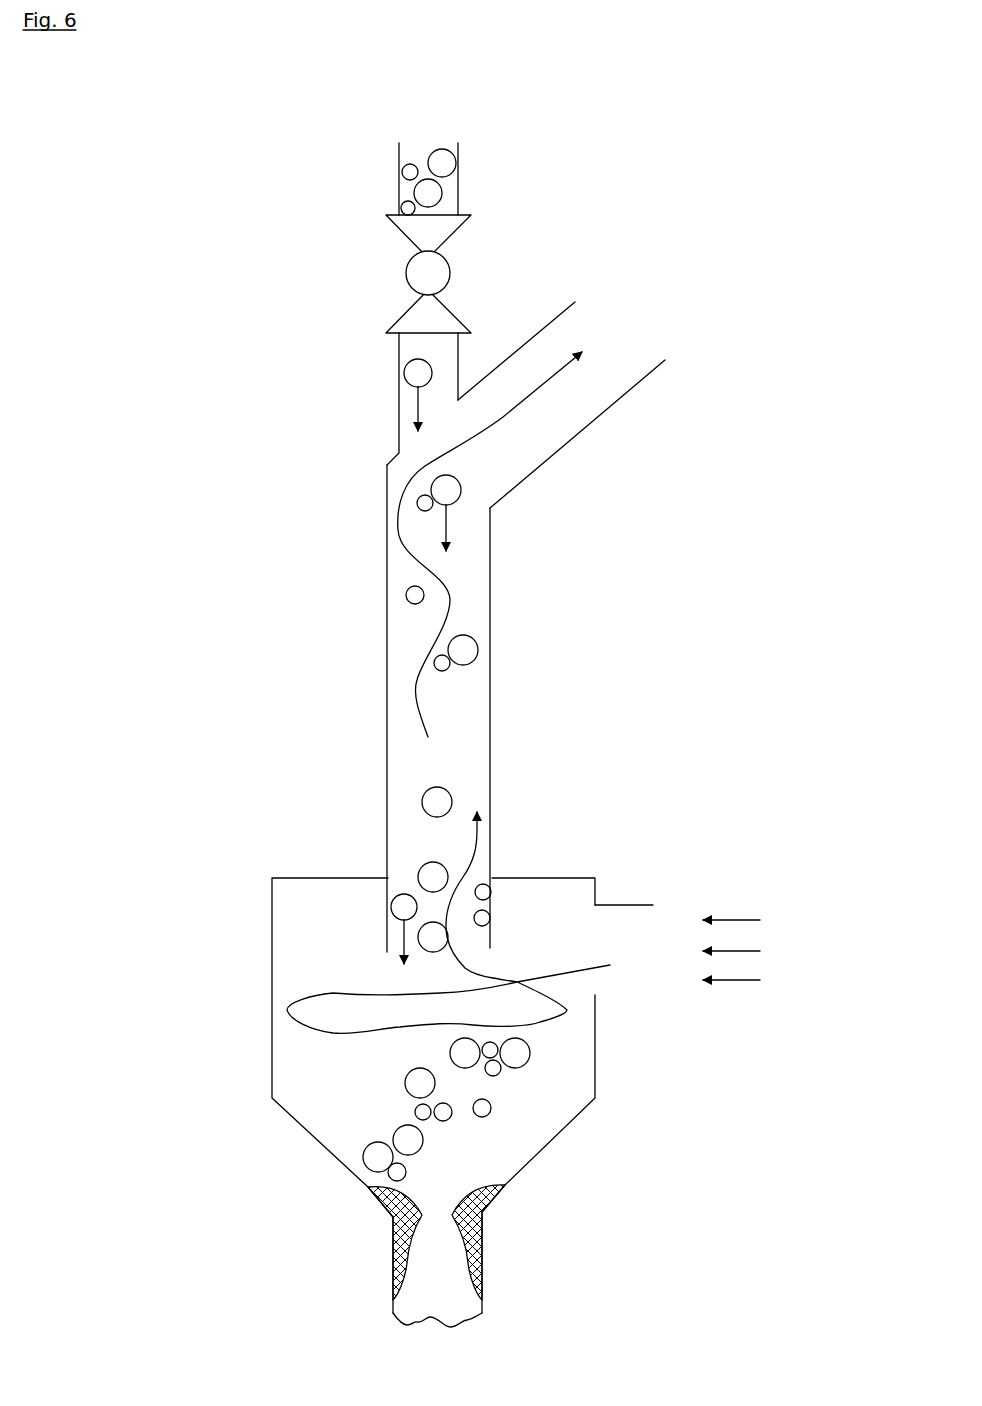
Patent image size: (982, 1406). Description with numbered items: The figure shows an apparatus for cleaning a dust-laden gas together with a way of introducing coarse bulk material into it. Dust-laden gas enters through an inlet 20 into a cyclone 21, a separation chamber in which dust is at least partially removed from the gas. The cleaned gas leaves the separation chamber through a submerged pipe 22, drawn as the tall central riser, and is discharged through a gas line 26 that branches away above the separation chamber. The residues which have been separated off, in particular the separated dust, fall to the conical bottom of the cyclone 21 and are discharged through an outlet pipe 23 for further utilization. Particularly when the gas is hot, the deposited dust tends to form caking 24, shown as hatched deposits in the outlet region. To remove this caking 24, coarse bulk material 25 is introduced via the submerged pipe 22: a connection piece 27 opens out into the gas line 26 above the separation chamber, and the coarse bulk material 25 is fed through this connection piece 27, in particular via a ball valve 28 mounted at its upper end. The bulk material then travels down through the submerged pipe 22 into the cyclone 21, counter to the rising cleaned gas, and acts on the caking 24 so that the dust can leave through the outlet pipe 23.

The inlet 20 is at (627, 905).
The cyclone 21 is at (273, 1070).
The submerged pipe 22 is at (388, 803).
The outlet pipe 23 is at (483, 1313).
The caking 24 is at (395, 1217).
The coarse bulk material 25 is at (428, 877).
The gas line 26 is at (560, 452).
The connection piece 27 is at (398, 402).
The ball valve 28 is at (413, 288).